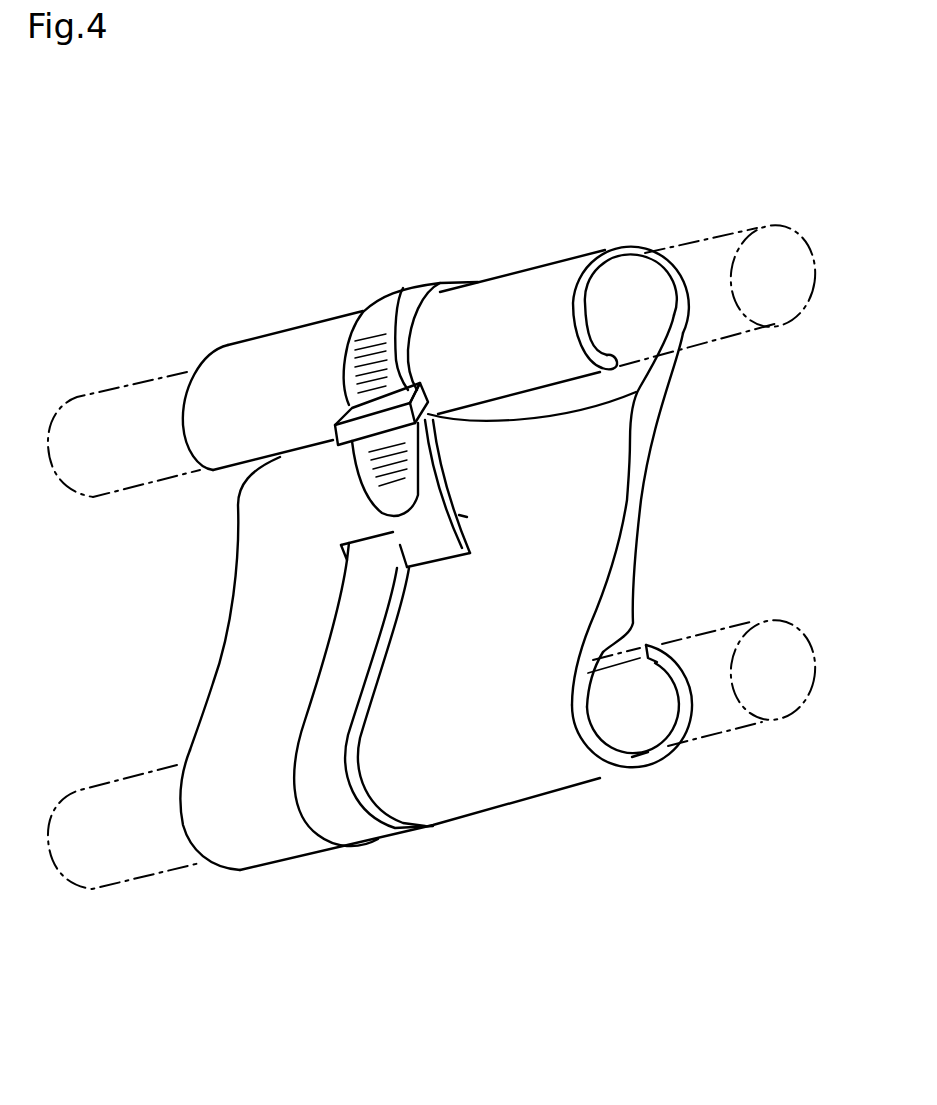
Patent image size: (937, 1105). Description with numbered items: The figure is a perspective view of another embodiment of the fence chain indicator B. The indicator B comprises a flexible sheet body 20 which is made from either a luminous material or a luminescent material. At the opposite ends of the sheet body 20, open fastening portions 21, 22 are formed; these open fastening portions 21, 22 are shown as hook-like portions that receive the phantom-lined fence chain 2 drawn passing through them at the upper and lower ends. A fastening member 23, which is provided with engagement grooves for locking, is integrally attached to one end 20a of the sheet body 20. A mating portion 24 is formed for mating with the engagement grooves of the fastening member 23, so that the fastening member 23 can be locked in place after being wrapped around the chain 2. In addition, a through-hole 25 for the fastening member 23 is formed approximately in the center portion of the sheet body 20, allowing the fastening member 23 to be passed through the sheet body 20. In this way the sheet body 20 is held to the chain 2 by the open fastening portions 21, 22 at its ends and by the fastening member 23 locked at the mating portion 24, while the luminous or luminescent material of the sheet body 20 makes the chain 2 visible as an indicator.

The pipe (tube) 2 is at (707, 257).
The fence chain indicator B is at (500, 222).
The flexible sheet body 20 is at (640, 517).
The one end of sheet body 20a is at (633, 394).
The open fastening portion 21 is at (620, 240).
The open fastening portion 22 is at (653, 768).
The fastening member 23 is at (400, 285).
The mating portion 24 is at (333, 428).
The through-hole 25 is at (357, 560).